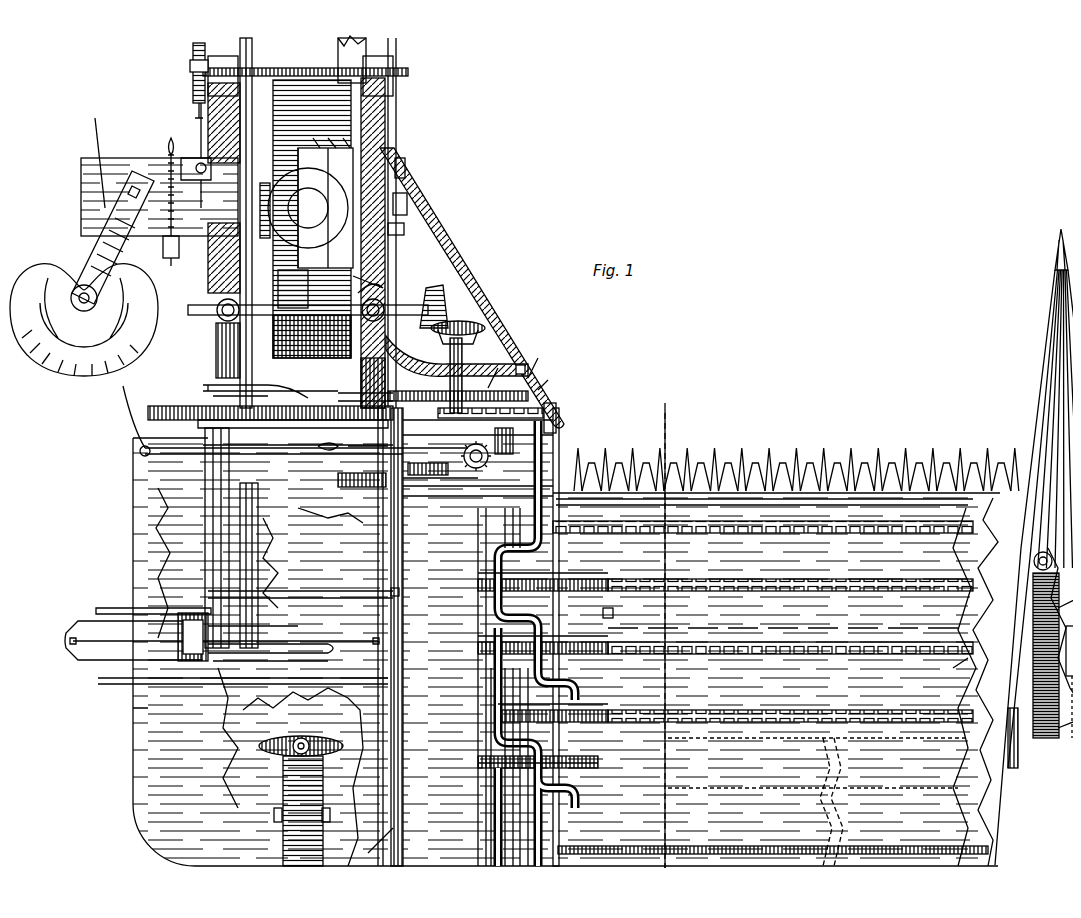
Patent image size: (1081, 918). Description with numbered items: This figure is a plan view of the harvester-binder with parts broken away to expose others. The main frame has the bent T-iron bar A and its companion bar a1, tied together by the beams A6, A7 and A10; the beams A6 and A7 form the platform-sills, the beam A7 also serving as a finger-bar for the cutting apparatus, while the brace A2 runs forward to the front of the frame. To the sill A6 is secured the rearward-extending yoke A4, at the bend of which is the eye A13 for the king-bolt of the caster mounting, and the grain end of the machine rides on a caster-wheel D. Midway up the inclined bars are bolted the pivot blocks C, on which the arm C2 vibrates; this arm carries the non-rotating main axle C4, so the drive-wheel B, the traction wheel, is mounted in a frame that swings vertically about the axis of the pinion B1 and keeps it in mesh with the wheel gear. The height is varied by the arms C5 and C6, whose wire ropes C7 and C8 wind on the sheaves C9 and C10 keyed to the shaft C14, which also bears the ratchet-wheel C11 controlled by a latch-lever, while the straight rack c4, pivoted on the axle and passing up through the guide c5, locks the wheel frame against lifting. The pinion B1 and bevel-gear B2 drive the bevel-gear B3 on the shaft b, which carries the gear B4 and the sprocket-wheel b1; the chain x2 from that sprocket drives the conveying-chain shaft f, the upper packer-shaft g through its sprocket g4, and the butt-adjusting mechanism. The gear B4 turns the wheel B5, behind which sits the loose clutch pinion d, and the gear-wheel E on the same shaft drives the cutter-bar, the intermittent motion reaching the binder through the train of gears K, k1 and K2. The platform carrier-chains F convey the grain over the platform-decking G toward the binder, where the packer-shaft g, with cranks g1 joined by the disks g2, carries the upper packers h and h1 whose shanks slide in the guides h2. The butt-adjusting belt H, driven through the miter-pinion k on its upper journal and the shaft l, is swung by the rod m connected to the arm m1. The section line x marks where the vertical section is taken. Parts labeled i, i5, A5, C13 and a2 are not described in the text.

The parallel bar A is at (975, 495).
The platform carrier-chain F is at (726, 644).
The platform-decking G is at (783, 625).
The beam A6 is at (130, 705).
The upper packer-shaft g is at (540, 455).
The crank g1 is at (568, 793).
The disk g2 is at (600, 752).
The parallel bar a1 is at (516, 687).
The guide h2 is at (600, 600).
The cam and gear wheel K is at (140, 400).
The beam A7 is at (192, 538).
The upper packer h is at (290, 540).
The upper packer h1 is at (319, 806).
The arm m1 is at (160, 450).
The rod m is at (124, 413).
The beam A10 is at (175, 592).
The rod i is at (224, 653).
The piston i5 is at (88, 652).
The yoke A4 is at (285, 748).
The drum A5 is at (285, 811).
The break a2 is at (303, 777).
The eye A13 is at (301, 738).
The shaft b is at (518, 338).
The miter-pinion k is at (479, 457).
The butt-adjusting belt H is at (440, 462).
The gear-wheel E is at (386, 465).
The shaft l is at (486, 446).
The conveying-chain shaft f is at (538, 436).
The wire rope C7 is at (239, 223).
The wire rope C8 is at (392, 243).
The sheave C10 is at (388, 55).
The shaft C14 is at (250, 70).
The sheave C9 is at (300, 66).
The block C is at (192, 72).
The ratchet-wheel C11 is at (188, 92).
The arm C2 is at (189, 169).
The rack c4 is at (155, 242).
The guide c5 is at (163, 258).
The arm C6 is at (255, 180).
The arm C5 is at (397, 180).
The main axle C4 is at (400, 215).
The bracket C13 is at (407, 235).
The brace A2 is at (435, 232).
The drive-wheel B is at (308, 345).
The pinion B1 is at (380, 270).
The bevel-gear wheel B2 is at (440, 288).
The bevel-gear wheel B3 is at (470, 318).
The gear-wheel B5 is at (457, 365).
The gear-wheel B4 is at (530, 358).
The sprocket-wheel b1 is at (530, 379).
The chain x2 is at (545, 400).
The sprocket-wheel g4 is at (548, 410).
The section line x is at (661, 642).
The pinion d is at (365, 388).
The gear k1 is at (270, 406).
The gear K2 is at (266, 396).
The element wheel is at (84, 247).
The caster-wheel D is at (1030, 720).